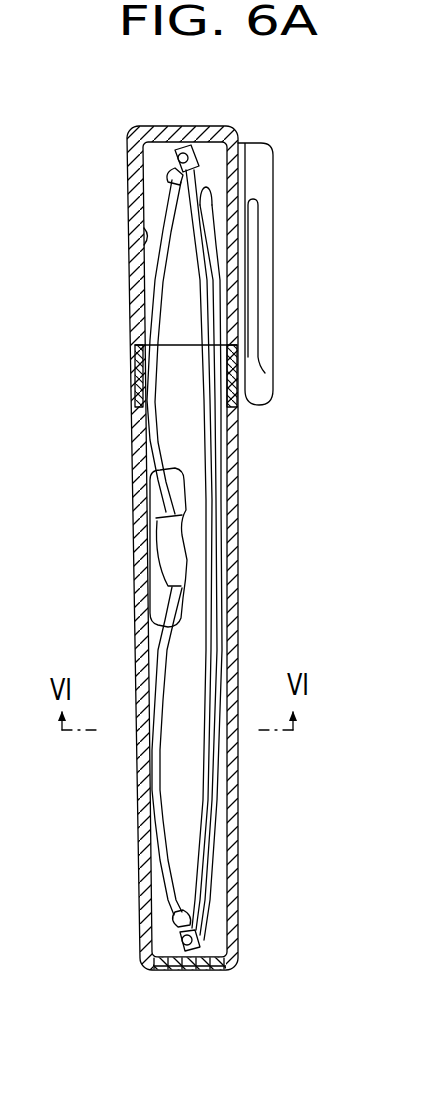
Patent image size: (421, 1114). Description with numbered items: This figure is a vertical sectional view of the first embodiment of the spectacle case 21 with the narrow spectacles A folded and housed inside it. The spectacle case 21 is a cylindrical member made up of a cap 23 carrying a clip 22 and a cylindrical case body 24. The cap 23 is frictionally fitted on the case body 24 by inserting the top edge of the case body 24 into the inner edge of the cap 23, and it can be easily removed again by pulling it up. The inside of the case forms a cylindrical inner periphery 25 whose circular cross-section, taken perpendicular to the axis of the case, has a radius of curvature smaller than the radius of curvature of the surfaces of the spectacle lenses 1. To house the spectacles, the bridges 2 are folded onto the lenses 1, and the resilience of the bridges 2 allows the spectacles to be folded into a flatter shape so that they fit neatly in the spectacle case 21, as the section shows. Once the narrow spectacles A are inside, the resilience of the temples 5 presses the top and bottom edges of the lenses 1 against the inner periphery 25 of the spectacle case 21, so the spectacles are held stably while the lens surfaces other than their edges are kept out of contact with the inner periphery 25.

The spectacle lenses 1 is at (153, 308).
The bridges 2 is at (158, 592).
The temples 5 is at (205, 666).
The spectacle case 21 is at (244, 544).
The clip 22 is at (262, 186).
The cap 23 is at (246, 290).
The case body 24 is at (231, 830).
The inner periphery 25 is at (143, 236).
The narrow spectacles A is at (160, 507).